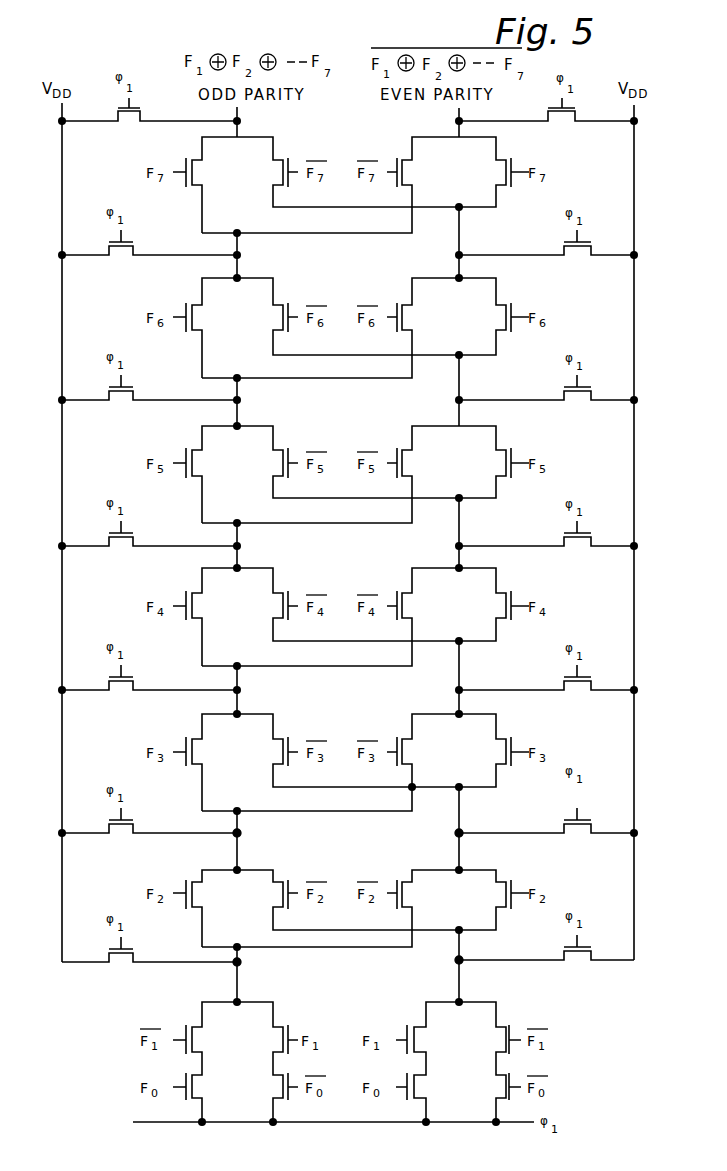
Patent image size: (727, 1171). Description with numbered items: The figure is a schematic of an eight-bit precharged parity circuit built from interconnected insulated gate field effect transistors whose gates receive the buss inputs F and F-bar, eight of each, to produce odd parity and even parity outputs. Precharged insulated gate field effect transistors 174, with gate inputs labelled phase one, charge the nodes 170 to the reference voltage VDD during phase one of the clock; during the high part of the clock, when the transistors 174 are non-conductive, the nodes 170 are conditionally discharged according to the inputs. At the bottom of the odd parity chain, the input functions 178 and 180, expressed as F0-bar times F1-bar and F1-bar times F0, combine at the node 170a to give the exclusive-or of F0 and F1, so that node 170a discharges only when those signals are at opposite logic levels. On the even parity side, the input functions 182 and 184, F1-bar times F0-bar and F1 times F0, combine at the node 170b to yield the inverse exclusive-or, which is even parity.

The nodes 170 is at (241, 835).
The node 170a is at (241, 965).
The node 170b is at (456, 963).
The precharged insulated gate field effect transistors 174 is at (591, 797).
The input function 178 is at (206, 1003).
The input function 180 is at (268, 1003).
The input function 182 is at (424, 1003).
The input function 184 is at (482, 1002).